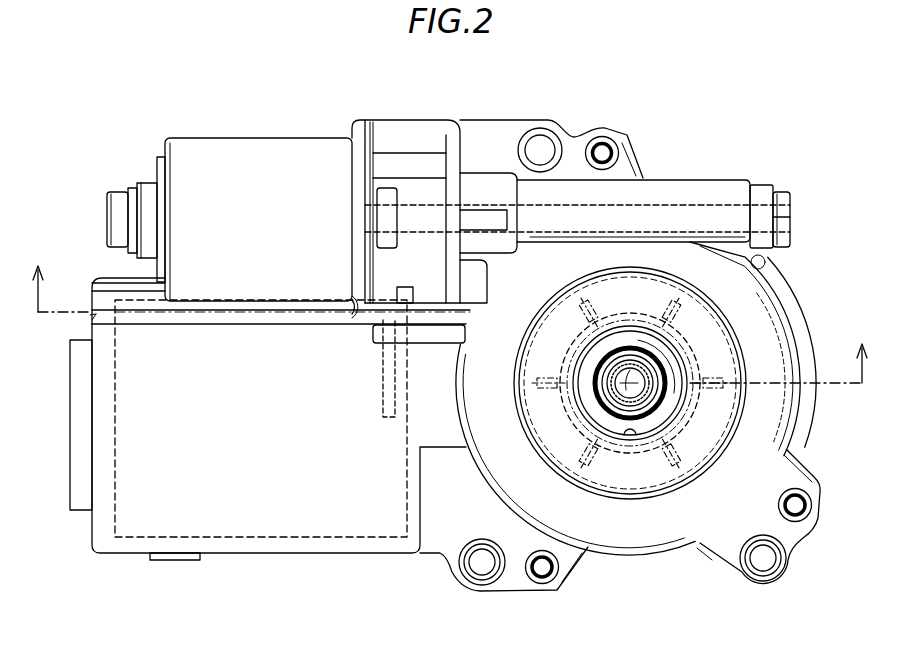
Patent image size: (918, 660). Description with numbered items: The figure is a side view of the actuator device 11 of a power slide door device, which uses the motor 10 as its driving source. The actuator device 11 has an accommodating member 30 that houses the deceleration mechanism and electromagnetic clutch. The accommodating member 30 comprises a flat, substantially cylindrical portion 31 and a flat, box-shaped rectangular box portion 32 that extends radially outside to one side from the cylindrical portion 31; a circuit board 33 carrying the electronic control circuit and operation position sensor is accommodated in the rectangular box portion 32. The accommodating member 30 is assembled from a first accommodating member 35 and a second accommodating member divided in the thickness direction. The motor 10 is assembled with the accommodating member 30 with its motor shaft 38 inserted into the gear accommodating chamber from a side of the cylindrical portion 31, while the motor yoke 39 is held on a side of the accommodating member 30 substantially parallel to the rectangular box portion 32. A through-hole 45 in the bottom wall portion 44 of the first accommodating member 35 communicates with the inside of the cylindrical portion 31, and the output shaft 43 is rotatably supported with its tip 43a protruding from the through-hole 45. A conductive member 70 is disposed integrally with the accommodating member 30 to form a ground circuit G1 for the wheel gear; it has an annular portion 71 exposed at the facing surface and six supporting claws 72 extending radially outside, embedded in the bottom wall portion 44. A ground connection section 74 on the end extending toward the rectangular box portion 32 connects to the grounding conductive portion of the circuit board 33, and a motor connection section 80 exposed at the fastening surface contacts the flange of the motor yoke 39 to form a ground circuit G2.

The actuator device 11 is at (147, 89).
The motor 10 is at (236, 194).
The motor yoke 39 is at (249, 140).
The motor connection section 80 is at (381, 298).
The conductive member 70 is at (551, 205).
The ground circuit G1 is at (551, 149).
The ground circuit G2 is at (551, 149).
The motor shaft 38 is at (697, 200).
The accommodating member 30 is at (643, 425).
The first accommodating member 35 is at (637, 429).
The bottom wall portion 44 is at (773, 403).
The cylindrical portion 31 is at (646, 560).
The rectangular box portion 32 is at (293, 556).
The circuit board 33 is at (229, 540).
The ground connection section 74 is at (383, 386).
The output shaft 43 is at (682, 383).
The tip 43a is at (682, 362).
The annular portion 71 is at (655, 372).
The supporting claws 72 is at (682, 300).
The through-hole 45 is at (633, 440).